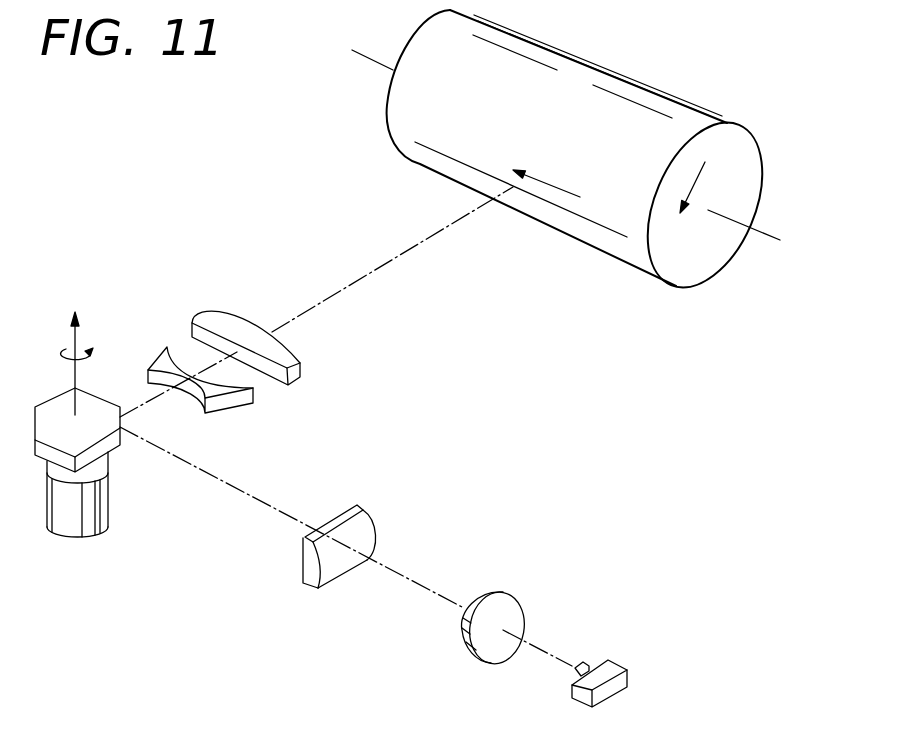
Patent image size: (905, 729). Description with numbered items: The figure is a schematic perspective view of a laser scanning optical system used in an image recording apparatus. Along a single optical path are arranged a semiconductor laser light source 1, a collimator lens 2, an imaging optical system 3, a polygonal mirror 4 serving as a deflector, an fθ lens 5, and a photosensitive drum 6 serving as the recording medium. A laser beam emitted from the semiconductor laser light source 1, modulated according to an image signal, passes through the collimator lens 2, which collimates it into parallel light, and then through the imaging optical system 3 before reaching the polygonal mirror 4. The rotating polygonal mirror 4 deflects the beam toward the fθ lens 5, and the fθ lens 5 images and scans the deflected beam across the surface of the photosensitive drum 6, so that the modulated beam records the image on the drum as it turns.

The semiconductor laser light source 1 is at (613, 660).
The collimator lens 2 is at (515, 603).
The imaging optical system 3 is at (357, 505).
The polygonal mirror 4 is at (112, 450).
The fθ lens 5 is at (113, 350).
The photosensitive drum 6 is at (635, 260).